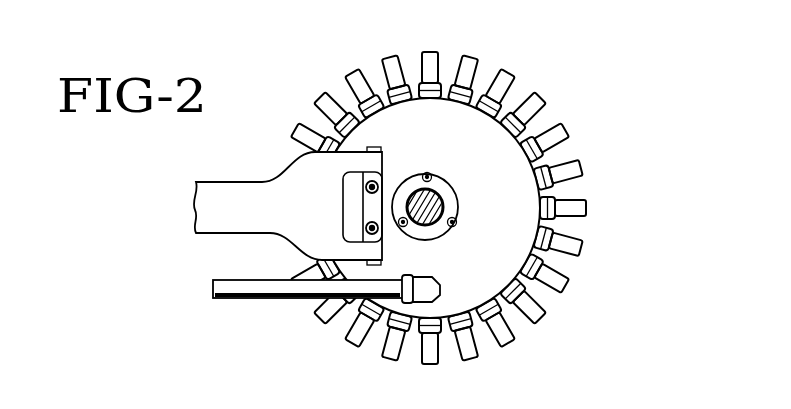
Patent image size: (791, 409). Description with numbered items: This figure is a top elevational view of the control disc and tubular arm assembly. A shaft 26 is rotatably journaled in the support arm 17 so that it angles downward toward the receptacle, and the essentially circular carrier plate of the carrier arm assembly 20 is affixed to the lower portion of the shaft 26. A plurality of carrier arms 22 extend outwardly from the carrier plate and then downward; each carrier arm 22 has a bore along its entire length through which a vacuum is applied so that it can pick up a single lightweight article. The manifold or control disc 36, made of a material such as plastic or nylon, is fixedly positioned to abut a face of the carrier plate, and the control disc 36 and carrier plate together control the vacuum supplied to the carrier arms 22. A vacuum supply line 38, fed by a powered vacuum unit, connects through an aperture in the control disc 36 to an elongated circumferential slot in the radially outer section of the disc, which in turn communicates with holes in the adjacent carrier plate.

The carrier arm assembly 20 is at (480, 189).
The support arm 17 is at (222, 213).
The carrier arms 22 is at (530, 314).
The shaft 26 is at (443, 190).
The control disc 36 is at (510, 192).
The vacuum supply line 38 is at (268, 290).